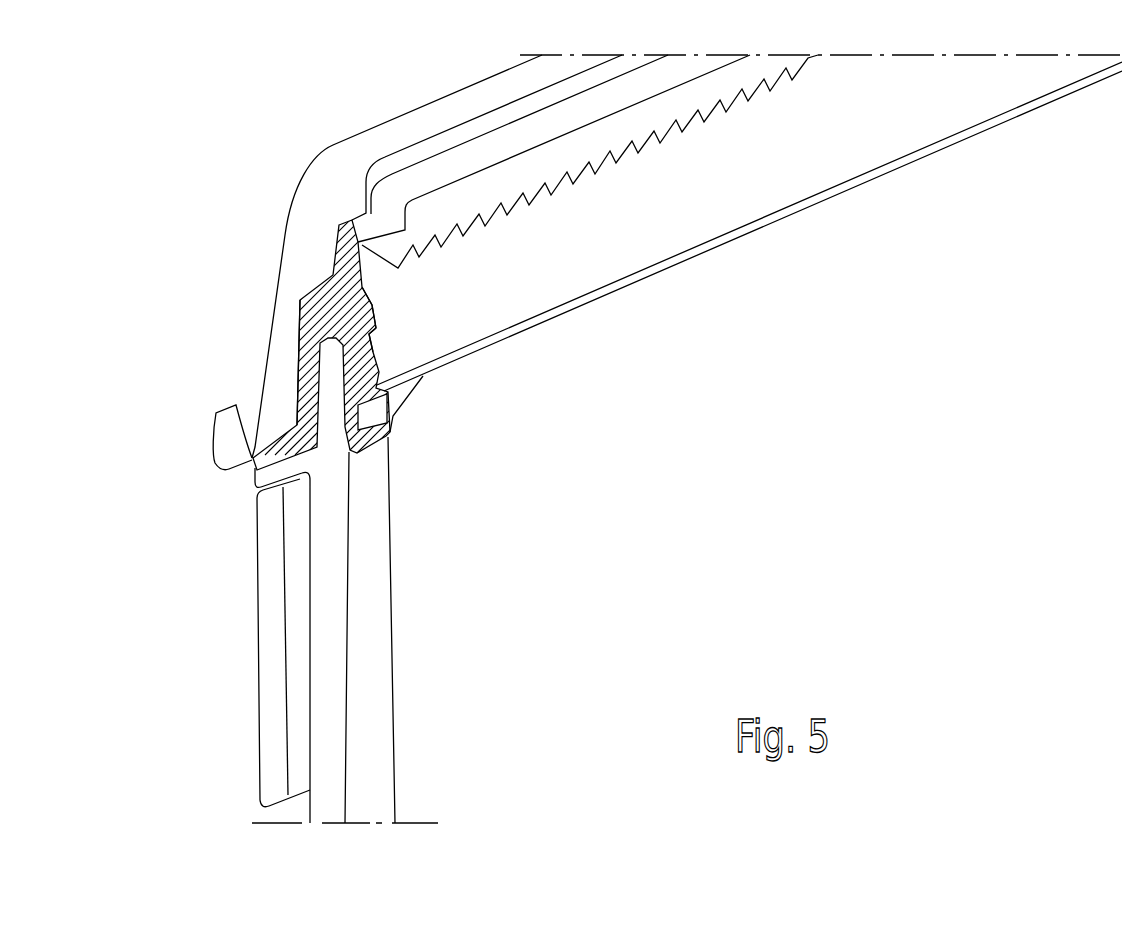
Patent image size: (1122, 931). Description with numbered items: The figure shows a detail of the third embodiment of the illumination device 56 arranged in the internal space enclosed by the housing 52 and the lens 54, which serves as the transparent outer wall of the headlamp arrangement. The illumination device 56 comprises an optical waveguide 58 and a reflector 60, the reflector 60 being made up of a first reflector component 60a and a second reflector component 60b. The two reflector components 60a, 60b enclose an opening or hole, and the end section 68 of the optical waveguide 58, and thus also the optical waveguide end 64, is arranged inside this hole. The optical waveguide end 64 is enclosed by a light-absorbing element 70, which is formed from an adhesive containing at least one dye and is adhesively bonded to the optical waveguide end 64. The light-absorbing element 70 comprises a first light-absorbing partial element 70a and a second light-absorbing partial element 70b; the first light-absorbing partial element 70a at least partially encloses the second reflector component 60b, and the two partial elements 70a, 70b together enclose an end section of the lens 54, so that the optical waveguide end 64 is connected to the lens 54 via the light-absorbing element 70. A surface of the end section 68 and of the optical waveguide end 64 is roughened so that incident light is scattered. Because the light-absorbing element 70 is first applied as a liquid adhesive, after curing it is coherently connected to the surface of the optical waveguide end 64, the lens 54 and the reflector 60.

The housing 52 is at (312, 243).
The lens 54 is at (328, 622).
The illumination device 56 is at (770, 472).
The optical waveguide 58 is at (733, 172).
The reflector 60 is at (337, 198).
The first reflector component 60a is at (510, 130).
The second reflector component 60b is at (370, 408).
The optical waveguide end 64 is at (393, 307).
The end section 68 is at (421, 221).
The light-absorbing element 70 is at (302, 288).
The first light-absorbing partial element 70a is at (380, 325).
The second light-absorbing partial element 70b is at (300, 323).